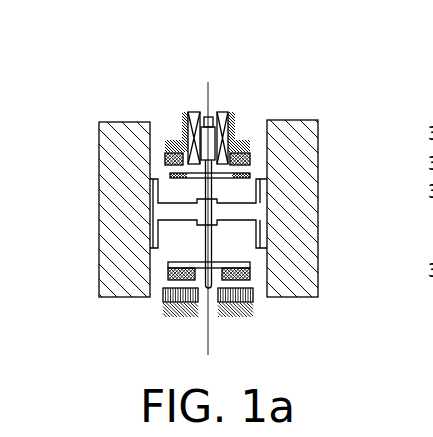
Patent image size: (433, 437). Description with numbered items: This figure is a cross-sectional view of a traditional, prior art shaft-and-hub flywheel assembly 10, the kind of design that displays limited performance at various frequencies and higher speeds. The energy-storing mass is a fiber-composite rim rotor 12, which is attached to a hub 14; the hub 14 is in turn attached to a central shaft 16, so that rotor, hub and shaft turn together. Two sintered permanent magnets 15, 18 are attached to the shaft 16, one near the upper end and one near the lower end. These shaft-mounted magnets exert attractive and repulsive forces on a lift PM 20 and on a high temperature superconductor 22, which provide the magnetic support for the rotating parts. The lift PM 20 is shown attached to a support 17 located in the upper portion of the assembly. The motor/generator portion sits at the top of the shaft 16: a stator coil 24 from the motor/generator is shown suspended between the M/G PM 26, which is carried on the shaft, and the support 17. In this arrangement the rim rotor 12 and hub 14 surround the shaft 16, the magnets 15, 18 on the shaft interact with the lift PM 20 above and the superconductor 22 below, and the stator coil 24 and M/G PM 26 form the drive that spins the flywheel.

The shaft-and-hub flywheel assembly 10 is at (91, 102).
The fiber-composite rim rotor 12 is at (295, 162).
The hub 14 is at (250, 212).
The sintered permanent magnet 15 is at (168, 277).
The shaft 16 is at (212, 238).
The support 17 is at (235, 125).
The sintered permanent magnet 18 is at (172, 175).
The lift PM 20 is at (165, 158).
The high temperature superconductor 22 is at (165, 290).
The stator coil 24 is at (220, 113).
The M/G PM 26 is at (203, 137).